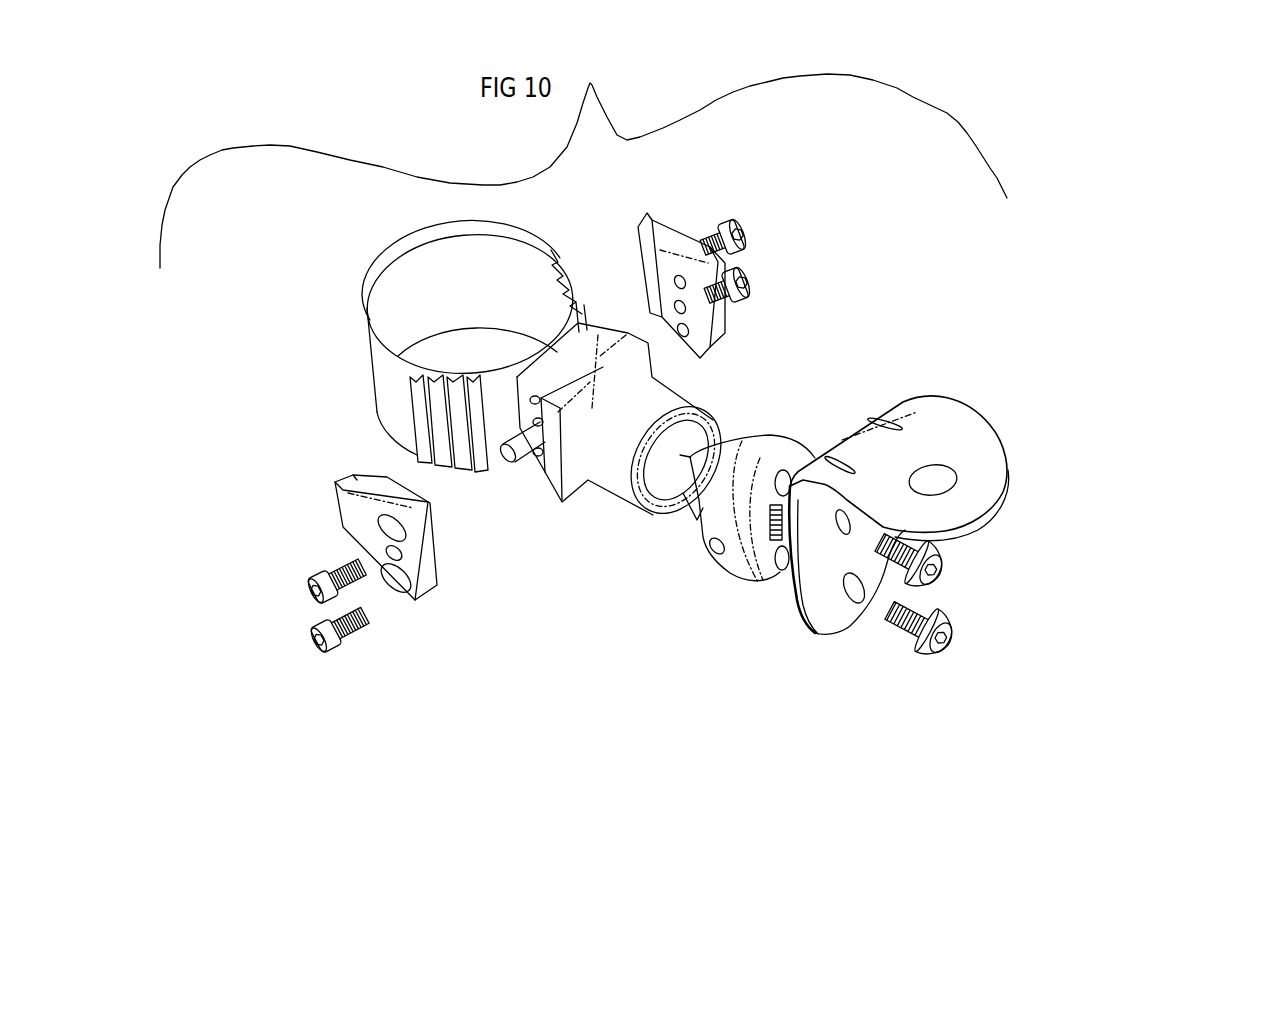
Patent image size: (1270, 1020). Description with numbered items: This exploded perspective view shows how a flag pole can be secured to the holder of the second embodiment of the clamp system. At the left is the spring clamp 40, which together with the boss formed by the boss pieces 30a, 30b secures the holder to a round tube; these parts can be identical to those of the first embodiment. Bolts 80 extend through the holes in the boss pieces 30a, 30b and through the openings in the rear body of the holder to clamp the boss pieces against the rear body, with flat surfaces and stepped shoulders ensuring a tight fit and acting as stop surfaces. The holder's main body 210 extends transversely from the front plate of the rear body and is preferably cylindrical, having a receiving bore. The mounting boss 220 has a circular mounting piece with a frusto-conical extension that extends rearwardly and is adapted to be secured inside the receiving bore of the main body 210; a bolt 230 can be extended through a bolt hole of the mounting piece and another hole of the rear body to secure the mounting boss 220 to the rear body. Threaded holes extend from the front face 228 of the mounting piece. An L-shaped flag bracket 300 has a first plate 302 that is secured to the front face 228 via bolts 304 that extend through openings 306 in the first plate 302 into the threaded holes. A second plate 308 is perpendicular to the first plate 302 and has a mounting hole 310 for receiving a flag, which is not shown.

The spring clamp 40 is at (422, 329).
The boss piece 30a is at (728, 234).
The boss piece 30b is at (351, 525).
The bolt 80 is at (527, 429).
The main body 210 is at (682, 426).
The mounting boss 220 is at (693, 508).
The bolt 230 is at (639, 581).
The front face 228 is at (726, 606).
The flag bracket 300 is at (993, 563).
The first plate 302 is at (853, 643).
The bolt 304 is at (985, 595).
The opening 306 is at (902, 669).
The second plate 308 is at (985, 451).
The mounting hole 310 is at (992, 430).